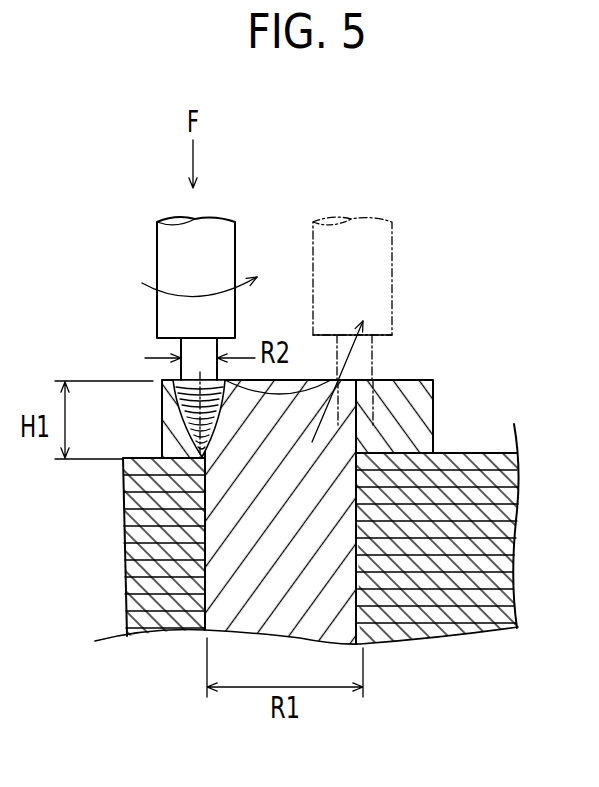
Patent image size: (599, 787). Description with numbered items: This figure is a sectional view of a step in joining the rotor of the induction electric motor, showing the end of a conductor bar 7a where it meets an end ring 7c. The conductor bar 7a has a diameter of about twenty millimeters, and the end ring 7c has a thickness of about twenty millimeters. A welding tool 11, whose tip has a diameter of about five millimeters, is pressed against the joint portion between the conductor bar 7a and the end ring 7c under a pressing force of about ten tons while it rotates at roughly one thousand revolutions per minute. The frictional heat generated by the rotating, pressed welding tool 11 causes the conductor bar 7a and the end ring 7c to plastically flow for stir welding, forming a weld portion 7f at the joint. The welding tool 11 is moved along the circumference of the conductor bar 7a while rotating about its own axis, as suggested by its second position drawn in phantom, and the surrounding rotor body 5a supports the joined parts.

The welding tool 11 is at (178, 253).
The weld portion 7f is at (172, 380).
The end ring 7c is at (172, 436).
The conductor bar 7a is at (312, 442).
The plate member 5a is at (128, 563).